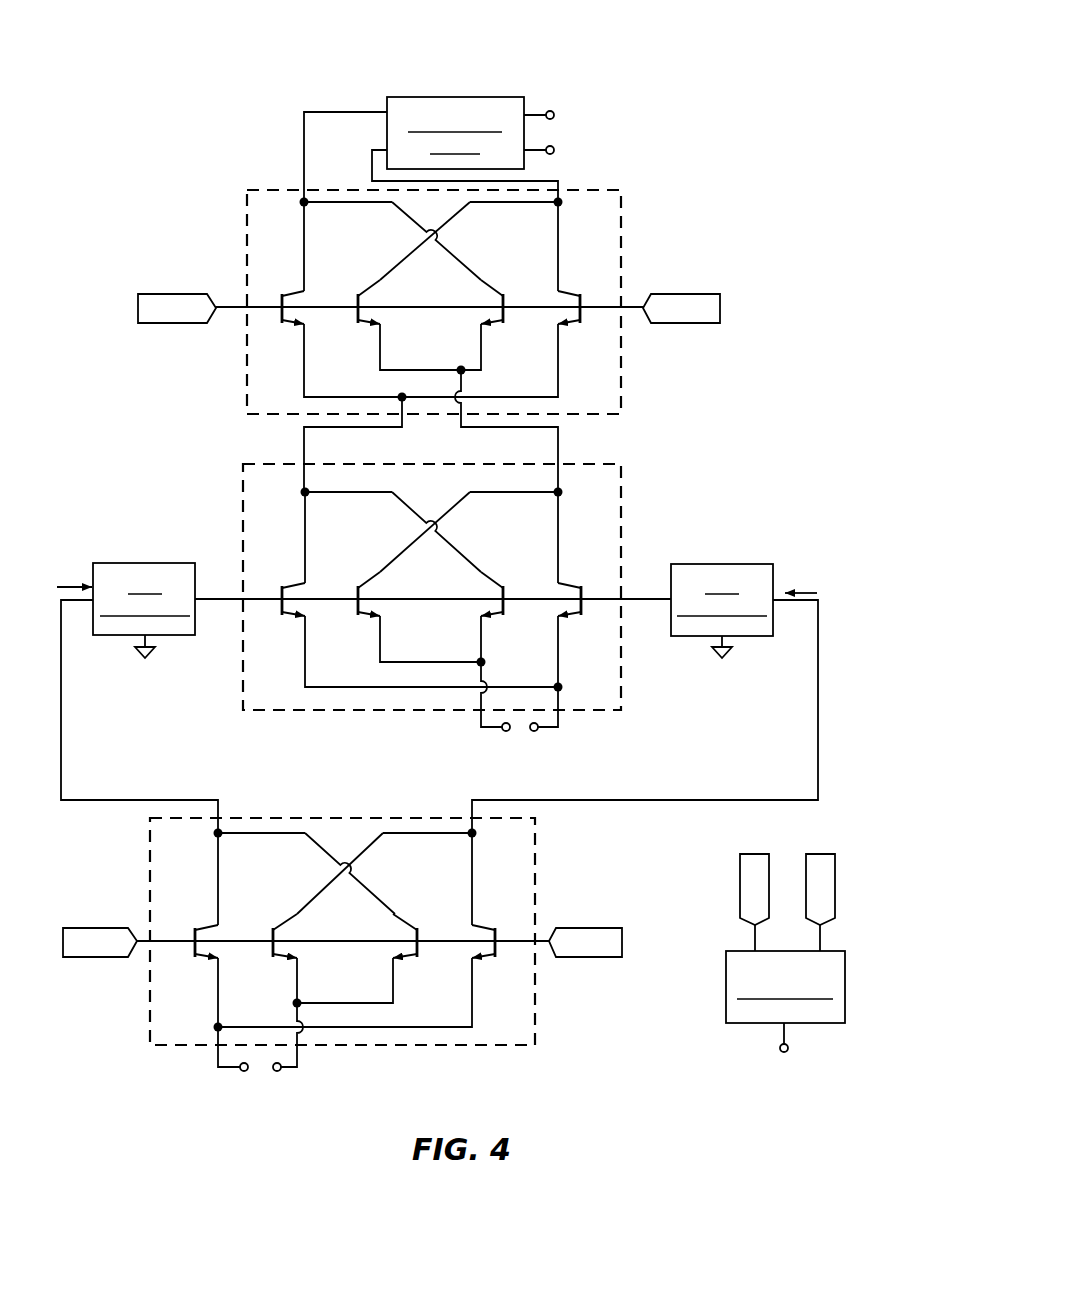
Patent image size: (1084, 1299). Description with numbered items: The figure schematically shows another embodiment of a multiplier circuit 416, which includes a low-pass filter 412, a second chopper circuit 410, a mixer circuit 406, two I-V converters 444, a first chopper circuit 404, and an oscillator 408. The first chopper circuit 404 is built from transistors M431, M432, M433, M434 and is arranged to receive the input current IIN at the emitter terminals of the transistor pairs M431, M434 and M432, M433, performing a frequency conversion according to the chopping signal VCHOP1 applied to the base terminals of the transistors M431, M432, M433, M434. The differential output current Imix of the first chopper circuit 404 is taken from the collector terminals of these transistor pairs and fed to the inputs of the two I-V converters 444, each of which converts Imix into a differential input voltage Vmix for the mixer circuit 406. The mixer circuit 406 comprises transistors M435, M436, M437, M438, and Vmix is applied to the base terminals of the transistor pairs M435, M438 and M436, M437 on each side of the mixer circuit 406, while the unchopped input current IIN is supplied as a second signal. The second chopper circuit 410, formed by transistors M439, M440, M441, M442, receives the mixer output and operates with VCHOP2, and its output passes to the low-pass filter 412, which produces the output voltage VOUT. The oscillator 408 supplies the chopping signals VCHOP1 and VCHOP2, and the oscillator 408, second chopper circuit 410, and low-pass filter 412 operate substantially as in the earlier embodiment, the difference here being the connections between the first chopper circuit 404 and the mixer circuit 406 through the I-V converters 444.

The multiplier circuit 416 is at (690, 69).
The low-pass filter 412 is at (460, 97).
The second chopper circuit 410 is at (621, 393).
The mixer circuit 406 is at (621, 690).
The first chopper circuit 404 is at (535, 1030).
The I-V converter 444 is at (140, 563).
The oscillator 408 is at (726, 983).
The transistor M431 is at (204, 926).
The transistor M432 is at (284, 924).
The transistor M433 is at (409, 928).
The transistor M434 is at (487, 926).
The transistor M435 is at (290, 584).
The transistor M436 is at (370, 582).
The transistor M437 is at (496, 586).
The transistor M438 is at (572, 584).
The transistor M439 is at (290, 292).
The transistor M440 is at (370, 290).
The transistor M441 is at (496, 295).
The transistor M442 is at (572, 292).